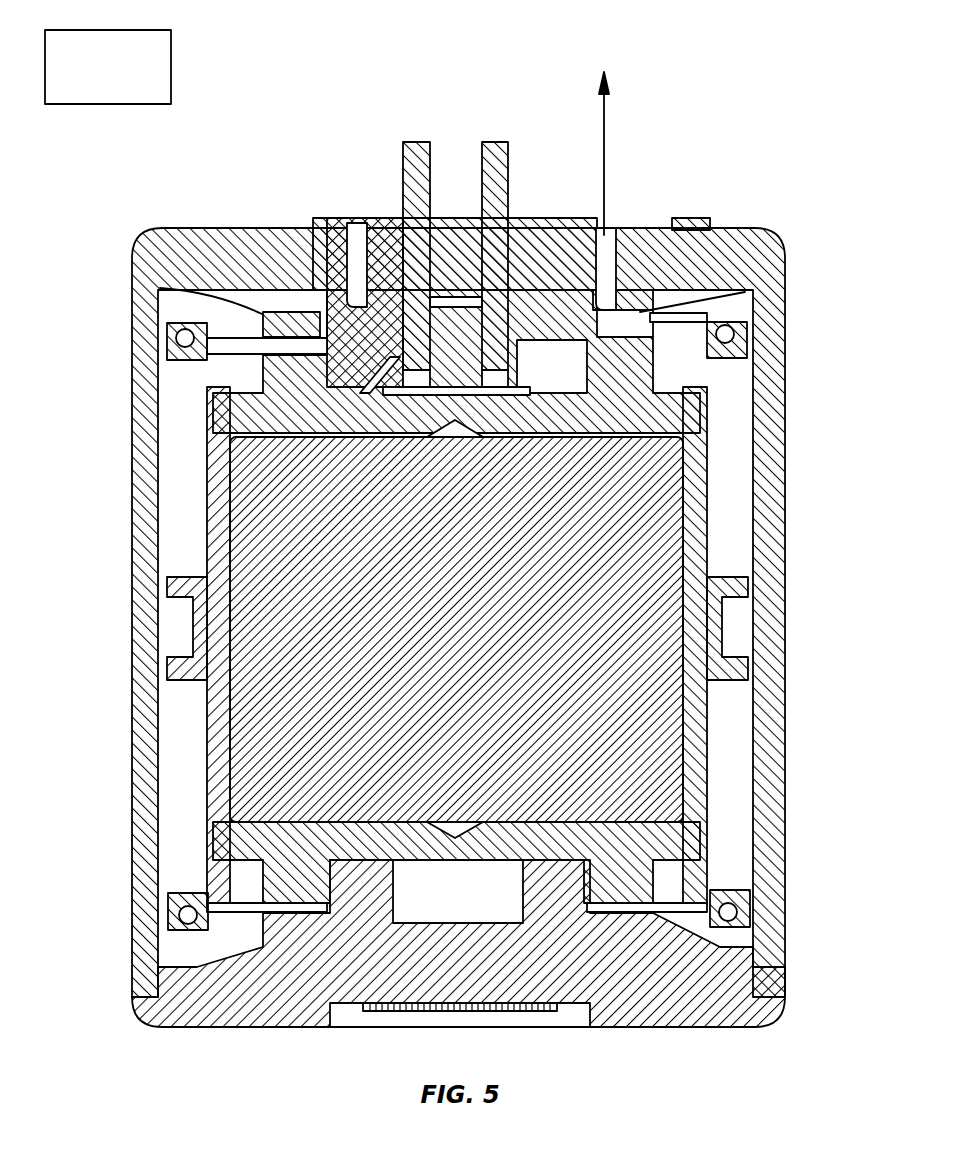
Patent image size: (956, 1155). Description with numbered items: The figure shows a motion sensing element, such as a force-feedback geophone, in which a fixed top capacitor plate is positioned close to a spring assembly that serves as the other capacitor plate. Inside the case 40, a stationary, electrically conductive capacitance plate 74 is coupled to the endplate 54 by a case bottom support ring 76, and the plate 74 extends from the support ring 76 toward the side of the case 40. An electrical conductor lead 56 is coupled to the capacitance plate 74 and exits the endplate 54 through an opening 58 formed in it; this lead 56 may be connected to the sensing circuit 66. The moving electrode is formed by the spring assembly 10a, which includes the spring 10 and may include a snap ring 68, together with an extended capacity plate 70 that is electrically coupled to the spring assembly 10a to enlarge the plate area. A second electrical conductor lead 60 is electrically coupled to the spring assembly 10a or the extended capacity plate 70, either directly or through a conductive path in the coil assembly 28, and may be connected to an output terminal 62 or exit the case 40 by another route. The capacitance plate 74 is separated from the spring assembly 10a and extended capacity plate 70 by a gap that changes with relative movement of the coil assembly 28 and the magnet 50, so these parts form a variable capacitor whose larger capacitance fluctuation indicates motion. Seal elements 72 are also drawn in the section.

The spring 10 is at (212, 375).
The spring assembly 10a is at (190, 326).
The coil assembly 28 is at (725, 625).
The case 40 is at (133, 735).
The magnet 50 is at (673, 765).
The endplate 54 is at (698, 218).
The electrical conductor lead 56 is at (607, 160).
The opening 58 is at (612, 228).
The second electrical conductor lead 60 is at (348, 293).
The output terminal 62 is at (405, 162).
The sensing circuit 66 is at (92, 80).
The snap ring 68 is at (178, 338).
The extended capacity plate 70 is at (200, 284).
The seal 72 is at (200, 355).
The capacitance plate 74 is at (735, 300).
The case bottom support ring 76 is at (620, 325).